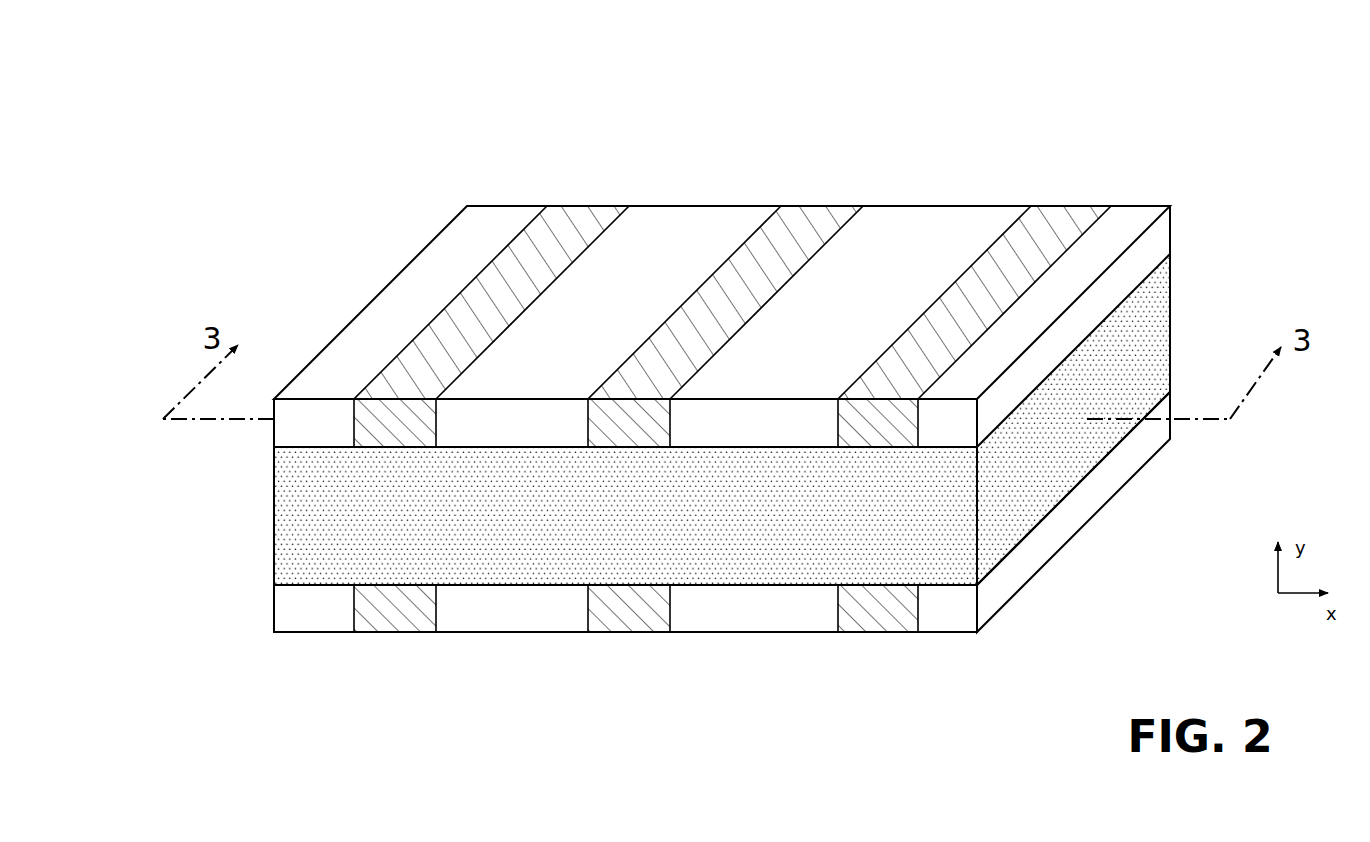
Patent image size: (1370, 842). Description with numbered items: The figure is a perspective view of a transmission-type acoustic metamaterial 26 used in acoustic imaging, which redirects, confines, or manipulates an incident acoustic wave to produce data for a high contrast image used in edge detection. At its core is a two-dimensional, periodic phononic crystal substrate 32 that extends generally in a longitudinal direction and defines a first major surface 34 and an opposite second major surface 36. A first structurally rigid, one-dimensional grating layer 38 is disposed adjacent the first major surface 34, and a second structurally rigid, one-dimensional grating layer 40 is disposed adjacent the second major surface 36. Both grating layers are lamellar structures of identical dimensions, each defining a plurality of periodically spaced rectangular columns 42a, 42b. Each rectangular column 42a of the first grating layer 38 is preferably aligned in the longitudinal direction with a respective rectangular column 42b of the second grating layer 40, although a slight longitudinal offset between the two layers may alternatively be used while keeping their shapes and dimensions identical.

The transmission-type acoustic metamaterial 26 is at (753, 382).
The two-dimensional periodic phononic crystal substrate 32 is at (1148, 323).
The first major surface 34 is at (1138, 280).
The second major surface 36 is at (1120, 440).
The first structurally rigid one-dimensional grating layer 38 is at (262, 437).
The second structurally rigid one-dimensional grating layer 40 is at (262, 612).
The periodically spaced rectangular columns of the first grating layer 42a is at (567, 222).
The periodically spaced rectangular columns of the second grating layer 42b is at (405, 633).